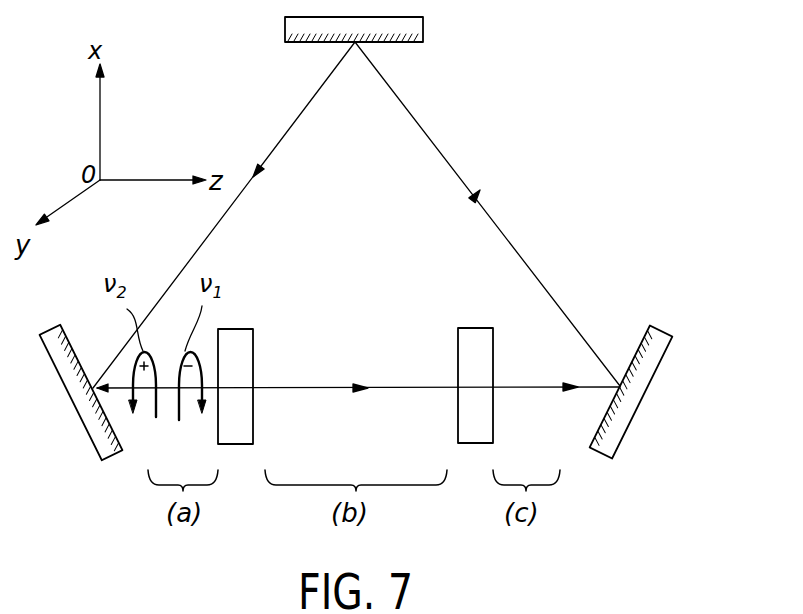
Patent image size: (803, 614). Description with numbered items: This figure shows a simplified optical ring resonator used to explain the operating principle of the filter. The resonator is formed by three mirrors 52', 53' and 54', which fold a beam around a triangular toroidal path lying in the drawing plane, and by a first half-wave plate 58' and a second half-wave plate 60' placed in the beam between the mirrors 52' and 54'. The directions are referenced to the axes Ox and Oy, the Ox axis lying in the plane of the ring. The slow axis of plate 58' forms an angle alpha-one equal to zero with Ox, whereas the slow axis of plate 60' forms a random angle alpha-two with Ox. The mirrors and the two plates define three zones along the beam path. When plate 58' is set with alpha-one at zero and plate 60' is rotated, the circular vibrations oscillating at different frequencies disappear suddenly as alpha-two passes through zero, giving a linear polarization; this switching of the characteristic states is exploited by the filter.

The mirror 52' is at (72, 405).
The mirror 53' is at (386, 43).
The mirror 54' is at (631, 343).
The first half-wave plate 58' is at (277, 358).
The second half-wave plate 60' is at (480, 358).